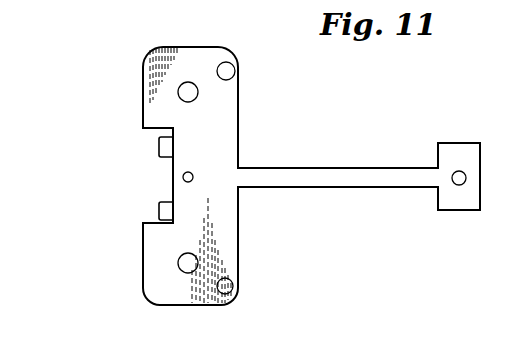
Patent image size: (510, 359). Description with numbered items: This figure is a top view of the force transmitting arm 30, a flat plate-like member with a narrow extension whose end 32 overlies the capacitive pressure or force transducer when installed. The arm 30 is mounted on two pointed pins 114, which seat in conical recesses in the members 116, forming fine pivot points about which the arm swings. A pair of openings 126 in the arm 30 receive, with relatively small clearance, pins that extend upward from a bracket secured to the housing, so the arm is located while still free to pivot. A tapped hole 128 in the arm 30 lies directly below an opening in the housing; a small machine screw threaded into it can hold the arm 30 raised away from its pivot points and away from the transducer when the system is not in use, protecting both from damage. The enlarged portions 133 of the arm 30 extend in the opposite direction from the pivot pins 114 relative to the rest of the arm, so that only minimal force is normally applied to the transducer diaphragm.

The force transmitting arm 30 is at (343, 165).
The end of the force transmitting arm 32 is at (475, 148).
The pointed pins 114 is at (231, 65).
The members 116 is at (226, 287).
The openings 126 is at (178, 95).
The tapped hole 128 is at (183, 178).
The enlarged portions 133 is at (150, 120).